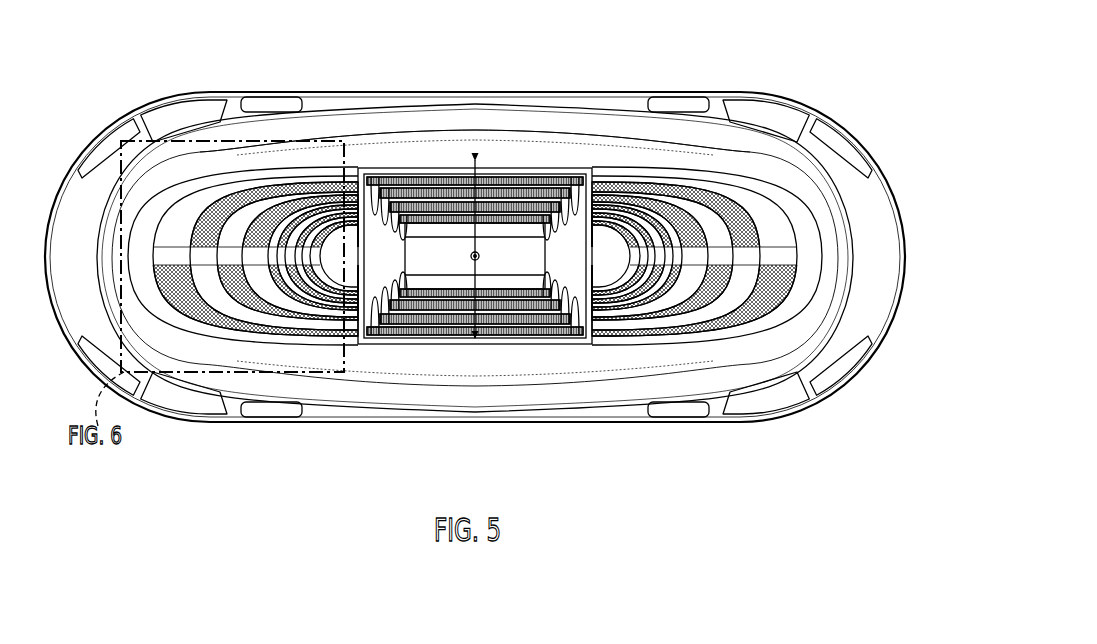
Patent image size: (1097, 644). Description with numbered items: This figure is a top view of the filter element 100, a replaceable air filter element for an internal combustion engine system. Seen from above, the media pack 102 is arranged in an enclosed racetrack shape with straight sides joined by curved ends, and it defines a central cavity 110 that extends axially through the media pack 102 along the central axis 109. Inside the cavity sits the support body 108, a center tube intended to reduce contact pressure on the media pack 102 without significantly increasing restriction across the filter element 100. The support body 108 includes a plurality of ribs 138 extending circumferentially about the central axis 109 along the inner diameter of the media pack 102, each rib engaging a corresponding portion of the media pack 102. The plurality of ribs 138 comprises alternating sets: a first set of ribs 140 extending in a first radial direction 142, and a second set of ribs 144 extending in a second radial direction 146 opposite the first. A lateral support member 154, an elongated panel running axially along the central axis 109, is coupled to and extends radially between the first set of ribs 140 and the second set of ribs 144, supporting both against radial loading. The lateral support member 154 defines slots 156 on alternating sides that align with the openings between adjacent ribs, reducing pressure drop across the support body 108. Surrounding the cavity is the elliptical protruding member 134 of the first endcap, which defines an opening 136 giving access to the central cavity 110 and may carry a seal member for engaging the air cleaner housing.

The filter element 100 is at (170, 54).
The media pack 102 is at (746, 314).
The support body 108 is at (765, 209).
The central axis 109 is at (472, 262).
The central cavity 110 is at (674, 348).
The elliptical protruding member 134 is at (320, 127).
The opening 136 is at (376, 131).
The plurality of ribs 138 is at (705, 206).
The first set of ribs 140 is at (683, 197).
The first radial direction 142 is at (468, 232).
The second set of ribs 144 is at (637, 322).
The second radial direction 146 is at (479, 260).
The lateral support member 154 is at (593, 262).
The slots 156 is at (378, 324).